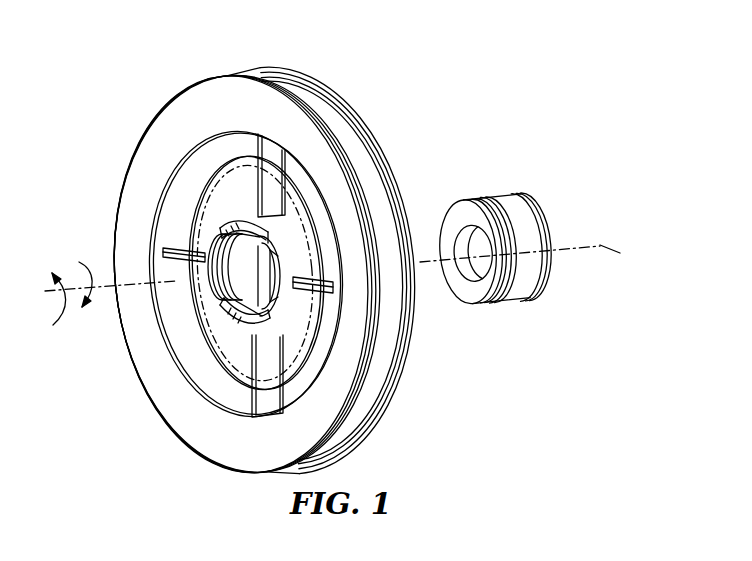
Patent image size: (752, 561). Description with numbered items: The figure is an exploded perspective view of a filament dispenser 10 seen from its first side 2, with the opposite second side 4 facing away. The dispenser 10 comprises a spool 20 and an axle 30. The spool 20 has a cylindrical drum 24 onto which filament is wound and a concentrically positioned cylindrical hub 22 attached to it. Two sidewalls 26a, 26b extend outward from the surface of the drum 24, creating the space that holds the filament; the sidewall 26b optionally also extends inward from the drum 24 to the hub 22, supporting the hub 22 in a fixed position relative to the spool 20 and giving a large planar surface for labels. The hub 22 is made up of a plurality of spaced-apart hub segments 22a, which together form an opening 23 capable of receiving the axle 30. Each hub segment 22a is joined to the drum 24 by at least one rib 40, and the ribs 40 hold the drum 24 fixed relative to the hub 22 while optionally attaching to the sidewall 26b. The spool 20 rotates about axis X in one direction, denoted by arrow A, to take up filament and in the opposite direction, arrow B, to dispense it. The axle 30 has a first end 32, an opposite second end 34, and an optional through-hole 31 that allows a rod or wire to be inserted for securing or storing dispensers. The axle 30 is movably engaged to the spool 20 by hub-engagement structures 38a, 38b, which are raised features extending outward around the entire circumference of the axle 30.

The filament dispenser 10 is at (336, 262).
The first side 2 is at (127, 213).
The second side 4 is at (332, 98).
The spool 20 is at (374, 445).
The cylindrical hub 22 is at (237, 216).
The hub segments 22a is at (297, 302).
The opening 23 is at (205, 297).
The cylindrical drum 24 is at (373, 267).
The sidewall 26a is at (172, 121).
The sidewall 26b is at (295, 175).
The axle 30 is at (516, 312).
The through-hole 31 is at (474, 245).
The first end 32 is at (477, 293).
The second end 34 is at (543, 228).
The hub-engagement structure 38a is at (520, 200).
The hub-engagement structure 38b is at (490, 202).
The rib 40 is at (267, 402).